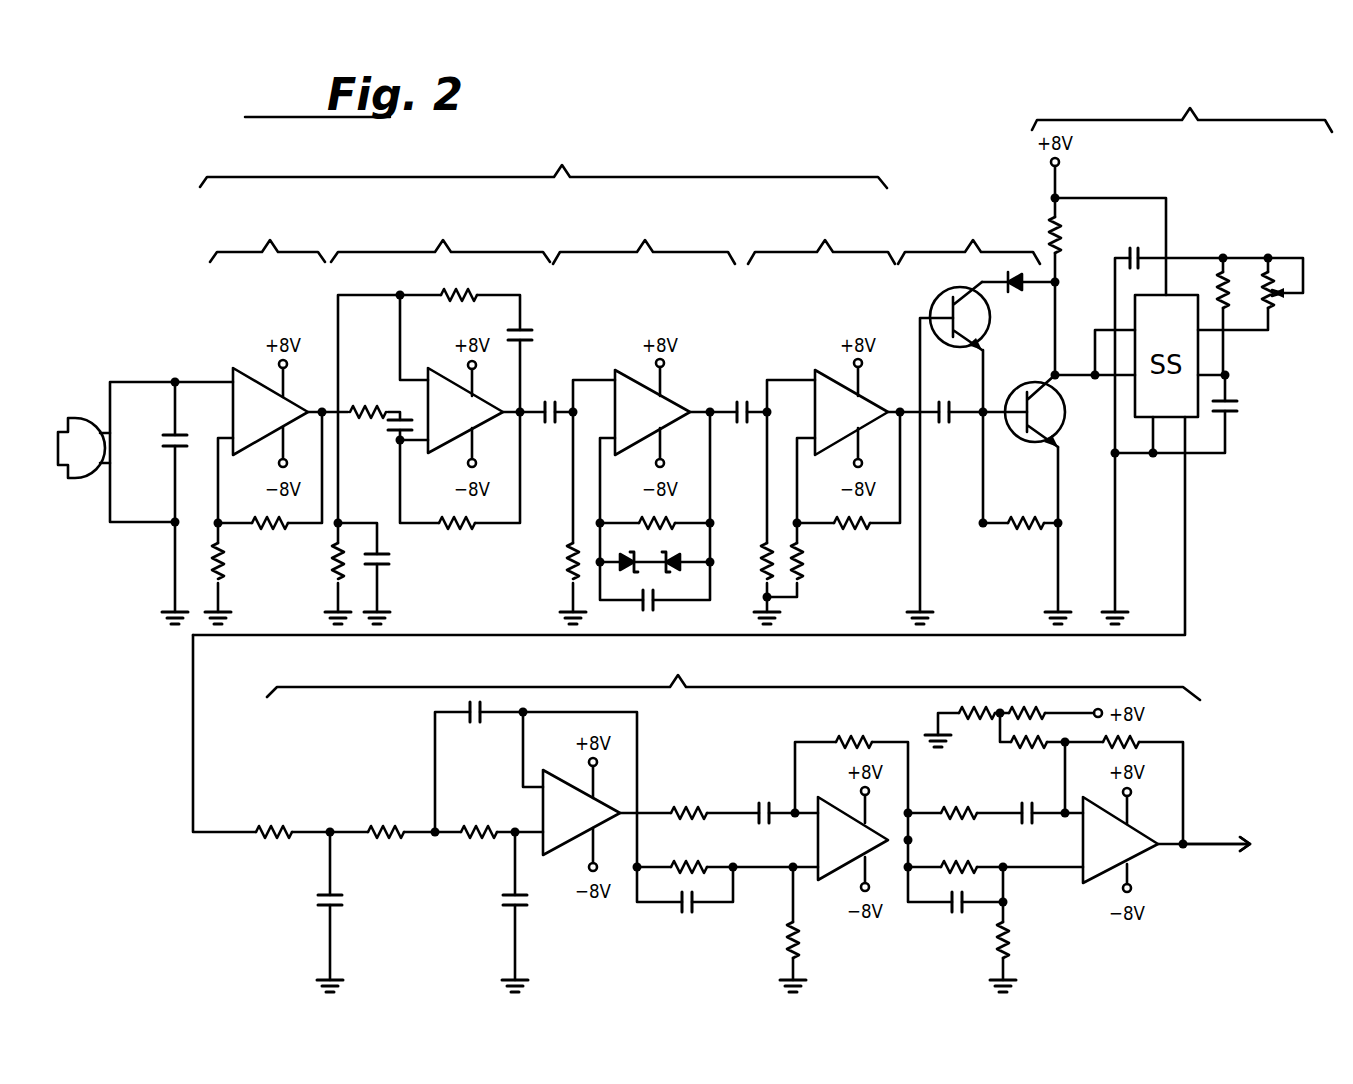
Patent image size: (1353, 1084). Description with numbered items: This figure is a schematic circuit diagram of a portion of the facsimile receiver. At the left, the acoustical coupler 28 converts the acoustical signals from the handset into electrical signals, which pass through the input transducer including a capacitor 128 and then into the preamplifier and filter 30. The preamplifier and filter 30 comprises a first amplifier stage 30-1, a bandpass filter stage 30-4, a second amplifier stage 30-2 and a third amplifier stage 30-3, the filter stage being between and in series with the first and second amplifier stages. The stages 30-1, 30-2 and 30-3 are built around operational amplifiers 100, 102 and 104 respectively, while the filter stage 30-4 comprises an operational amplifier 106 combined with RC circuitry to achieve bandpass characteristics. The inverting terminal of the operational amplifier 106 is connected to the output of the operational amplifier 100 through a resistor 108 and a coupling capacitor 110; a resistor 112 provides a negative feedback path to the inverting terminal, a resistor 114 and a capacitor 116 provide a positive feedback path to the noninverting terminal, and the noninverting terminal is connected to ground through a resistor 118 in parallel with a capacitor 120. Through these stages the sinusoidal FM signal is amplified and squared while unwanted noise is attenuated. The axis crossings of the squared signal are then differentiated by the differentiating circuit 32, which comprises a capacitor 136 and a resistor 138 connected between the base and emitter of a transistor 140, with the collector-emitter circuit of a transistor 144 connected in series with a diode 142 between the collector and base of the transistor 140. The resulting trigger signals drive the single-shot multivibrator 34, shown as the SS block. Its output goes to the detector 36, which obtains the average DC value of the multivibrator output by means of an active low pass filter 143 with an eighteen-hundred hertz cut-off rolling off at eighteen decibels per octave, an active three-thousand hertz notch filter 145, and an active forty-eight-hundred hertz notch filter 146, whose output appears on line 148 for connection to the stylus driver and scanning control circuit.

The acoustical coupler 28 is at (80, 434).
The preamplifier and filter 30 is at (543, 163).
The first amplifier stage 30-1 is at (267, 236).
The bandpass filter stage 30-4 is at (440, 236).
The second amplifier stage 30-2 is at (644, 237).
The third amplifier stage 30-3 is at (821, 237).
The differentiating circuit 32 is at (969, 237).
The single-shot multivibrator 34 is at (1182, 105).
The detector 36 is at (733, 675).
The operational amplifier 100 is at (247, 378).
The operational amplifier 102 is at (668, 410).
The operational amplifier 104 is at (828, 386).
The operational amplifier 106 is at (442, 378).
The resistor 108 is at (358, 404).
The coupling capacitor 110 is at (392, 438).
The resistor 112 is at (458, 526).
The resistor 114 is at (479, 295).
The capacitor 116 is at (532, 332).
The resistor 118 is at (333, 560).
The capacitor 120 is at (393, 568).
The capacitor 128 is at (172, 447).
The capacitor 136 is at (950, 423).
The resistor 138 is at (1010, 531).
The transistor 140 is at (1057, 418).
The diode 142 is at (1012, 292).
The active low pass filter 143 is at (552, 951).
The transistor 144 is at (942, 302).
The notch filter 145 is at (829, 962).
The notch filter 146 is at (1057, 962).
The line 148 is at (1208, 842).